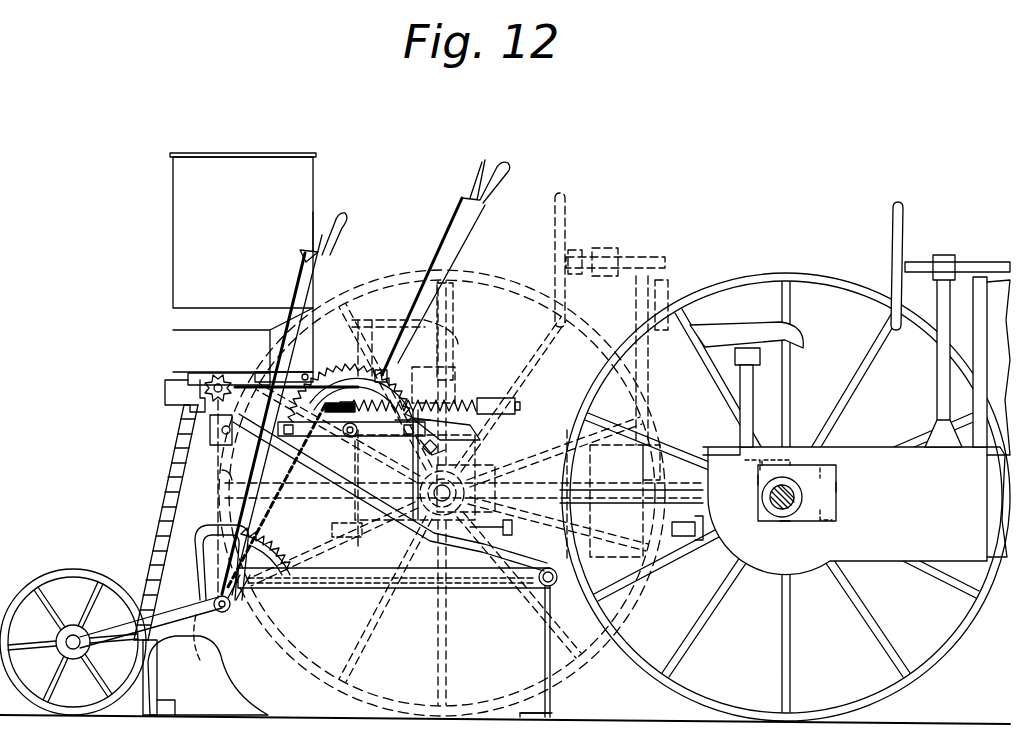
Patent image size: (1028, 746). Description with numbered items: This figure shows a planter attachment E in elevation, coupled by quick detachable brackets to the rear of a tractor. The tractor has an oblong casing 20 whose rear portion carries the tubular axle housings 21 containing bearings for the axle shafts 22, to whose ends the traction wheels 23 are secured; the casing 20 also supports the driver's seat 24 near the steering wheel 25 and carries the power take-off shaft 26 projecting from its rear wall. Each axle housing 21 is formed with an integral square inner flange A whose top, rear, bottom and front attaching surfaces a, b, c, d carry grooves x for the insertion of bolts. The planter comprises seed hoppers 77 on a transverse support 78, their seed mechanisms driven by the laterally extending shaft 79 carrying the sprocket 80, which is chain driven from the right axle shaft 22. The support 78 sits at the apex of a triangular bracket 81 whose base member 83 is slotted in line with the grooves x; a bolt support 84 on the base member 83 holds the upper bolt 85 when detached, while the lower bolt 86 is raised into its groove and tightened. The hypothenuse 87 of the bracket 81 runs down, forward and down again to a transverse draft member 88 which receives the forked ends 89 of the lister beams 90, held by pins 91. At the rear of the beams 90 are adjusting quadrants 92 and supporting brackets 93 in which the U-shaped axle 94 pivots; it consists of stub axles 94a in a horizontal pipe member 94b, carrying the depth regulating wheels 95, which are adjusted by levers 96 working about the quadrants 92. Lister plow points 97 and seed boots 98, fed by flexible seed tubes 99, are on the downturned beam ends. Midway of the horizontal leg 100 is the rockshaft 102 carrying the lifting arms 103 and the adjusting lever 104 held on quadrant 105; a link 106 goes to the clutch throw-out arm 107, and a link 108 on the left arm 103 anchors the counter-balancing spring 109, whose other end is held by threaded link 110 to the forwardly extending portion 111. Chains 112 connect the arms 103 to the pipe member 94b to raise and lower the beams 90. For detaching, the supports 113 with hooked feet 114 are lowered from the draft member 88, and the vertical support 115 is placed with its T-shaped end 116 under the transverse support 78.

The seed hoppers 77 is at (190, 182).
The transverse support 78 is at (195, 415).
The laterally extending shaft 79 is at (205, 379).
The sprocket 80 is at (210, 377).
The bracket 81 is at (358, 515).
The base member 83 is at (413, 453).
The support 84 is at (470, 430).
The upper bolt 85 is at (450, 442).
The lower bolt 86 is at (512, 527).
The hypothenuse 87 is at (425, 540).
The transverse draft member 88 is at (548, 588).
The forked ends 89 is at (548, 568).
The lister beams 90 is at (368, 589).
The pins 91 is at (555, 572).
The adjusting quadrants 92 is at (302, 538).
The supporting brackets 93 is at (240, 600).
The U-shaped axle 94 is at (232, 615).
The stub axles 94a is at (205, 595).
The horizontal pipe member 94b is at (238, 655).
The depth regulating wheels 95 is at (70, 570).
The adjusting levers 96 is at (334, 214).
The lister plow points 97 is at (195, 668).
The seed boots 98 is at (150, 707).
The flexible seed tubes 99 is at (183, 422).
The horizontally positioned leg 100 is at (356, 440).
The transverse rockshaft 102 is at (342, 420).
The lifting arms 103 is at (340, 372).
The adjusting lever 104 is at (508, 170).
The quadrant 105 is at (362, 322).
The link 106 is at (338, 352).
The clutch throw-out arm 107 is at (248, 388).
The link 108 is at (340, 362).
The counter-balancing spring 109 is at (435, 402).
The threaded link 110 is at (519, 407).
The forwardly extending portion 111 is at (483, 391).
The chains 112 is at (300, 517).
The supports 113 is at (550, 610).
The hooked feet 114 is at (545, 705).
The vertical support 115 is at (215, 490).
The T-shaped end 116 is at (212, 440).
The oblong casing 20 is at (925, 557).
The tubular axle housings 21 is at (762, 492).
The axle shafts 22 is at (772, 500).
The traction wheels 23 is at (925, 660).
The driver's seat 24 is at (712, 328).
The steering wheel 25 is at (896, 208).
The power take-off shaft 26 is at (690, 538).
The inner flange A is at (495, 490).
The planter attachment E is at (222, 470).
The top attaching surface a is at (773, 464).
The rear attaching surface b is at (757, 480).
The bottom attaching surface c is at (785, 522).
The front attaching surface d is at (838, 487).
The point h is at (822, 466).
The grooves x is at (833, 514).